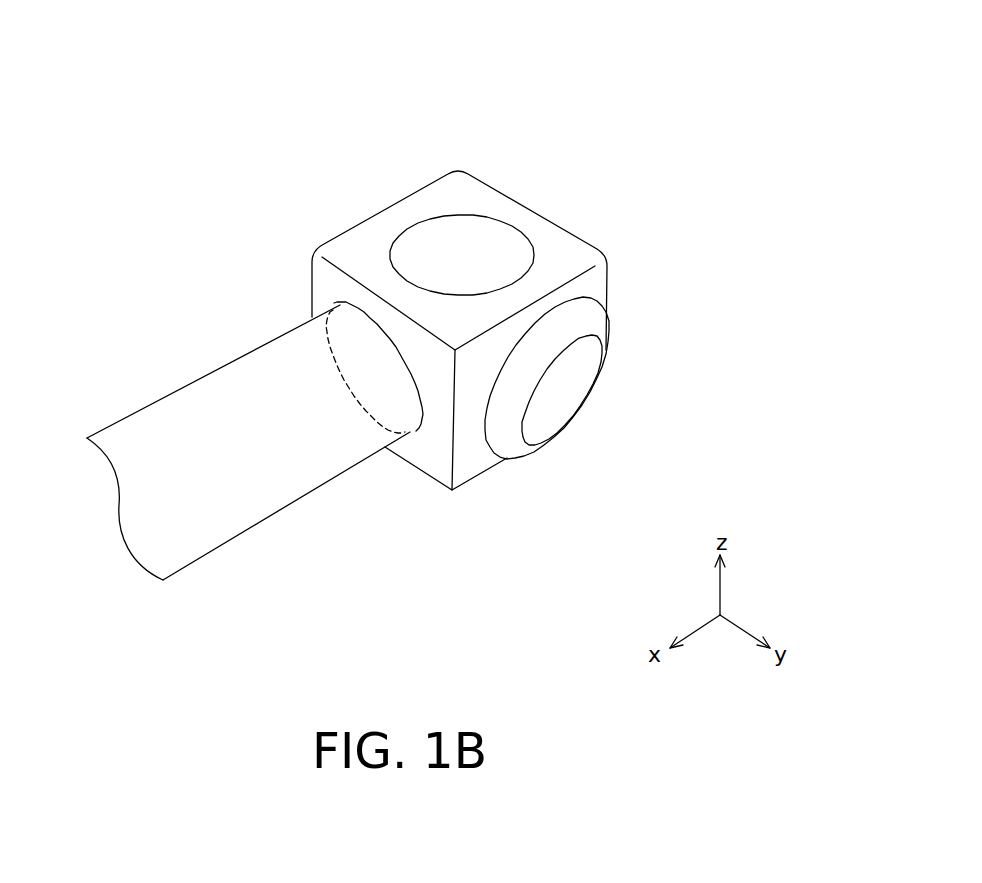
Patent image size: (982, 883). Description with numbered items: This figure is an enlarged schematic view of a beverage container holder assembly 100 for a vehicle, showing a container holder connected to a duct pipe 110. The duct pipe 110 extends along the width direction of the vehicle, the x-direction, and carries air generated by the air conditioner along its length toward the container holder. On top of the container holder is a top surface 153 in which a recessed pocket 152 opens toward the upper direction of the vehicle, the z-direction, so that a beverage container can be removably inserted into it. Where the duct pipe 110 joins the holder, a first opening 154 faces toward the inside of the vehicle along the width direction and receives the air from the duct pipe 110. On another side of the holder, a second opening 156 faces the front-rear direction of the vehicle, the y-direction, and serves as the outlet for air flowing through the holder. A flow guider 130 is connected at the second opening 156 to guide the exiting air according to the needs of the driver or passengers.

The beverage container holder assembly 100 is at (547, 73).
The duct pipe 110 is at (158, 417).
The flow guider 130 is at (508, 440).
The recessed pocket 152 is at (432, 248).
The top surface 153 is at (353, 250).
The first opening 154 is at (388, 388).
The second opening 156 is at (543, 390).